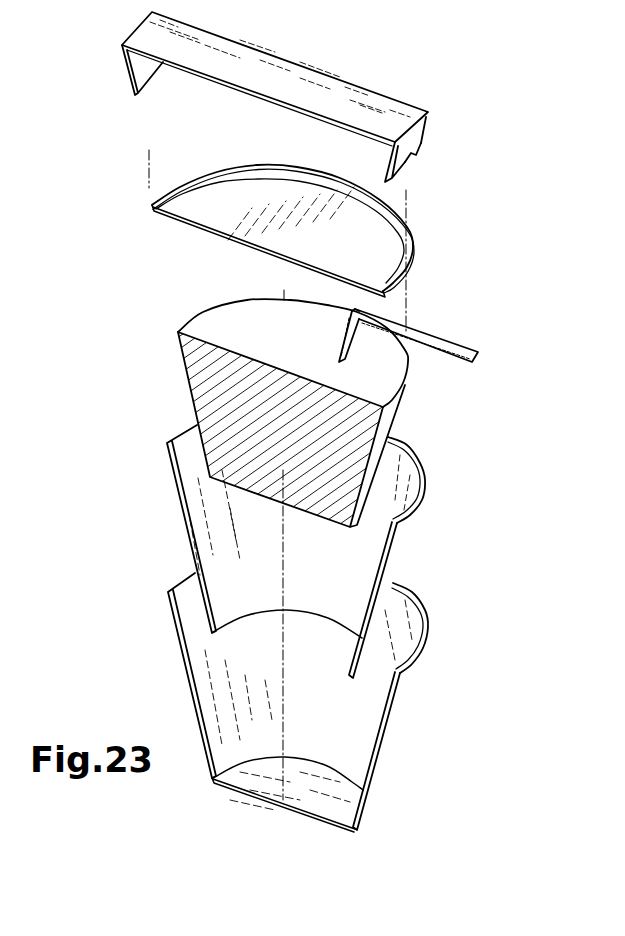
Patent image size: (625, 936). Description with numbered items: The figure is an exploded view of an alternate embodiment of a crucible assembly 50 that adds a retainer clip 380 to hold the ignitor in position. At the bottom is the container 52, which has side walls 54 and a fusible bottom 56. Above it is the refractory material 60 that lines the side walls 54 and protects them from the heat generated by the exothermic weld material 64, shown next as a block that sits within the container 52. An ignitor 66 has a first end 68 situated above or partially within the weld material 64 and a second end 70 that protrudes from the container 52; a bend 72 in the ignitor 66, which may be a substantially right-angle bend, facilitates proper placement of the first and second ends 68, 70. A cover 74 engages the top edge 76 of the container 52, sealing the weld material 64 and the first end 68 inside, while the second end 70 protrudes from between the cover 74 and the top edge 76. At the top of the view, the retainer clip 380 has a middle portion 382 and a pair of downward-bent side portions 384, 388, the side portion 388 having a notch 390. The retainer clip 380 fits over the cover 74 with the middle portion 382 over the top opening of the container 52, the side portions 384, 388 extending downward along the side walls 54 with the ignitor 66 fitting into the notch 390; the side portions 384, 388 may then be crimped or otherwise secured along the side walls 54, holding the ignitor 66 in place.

The crucible assembly 50 is at (92, 179).
The container 52 is at (165, 671).
The side walls 54 is at (170, 614).
The fusible bottom 56 is at (255, 782).
The refractory material 60 is at (172, 478).
The exothermic weld material 64 is at (195, 383).
The ignitor 66 is at (431, 317).
The first end 68 is at (345, 360).
The second end 70 is at (472, 342).
The bend 72 is at (351, 304).
The cover 74 is at (378, 262).
The top edge 76 is at (422, 483).
The retainer clip 380 is at (284, 44).
The middle portion 382 is at (318, 90).
The side portion 384 is at (124, 68).
The side portion 388 is at (416, 133).
The notch 390 is at (410, 181).